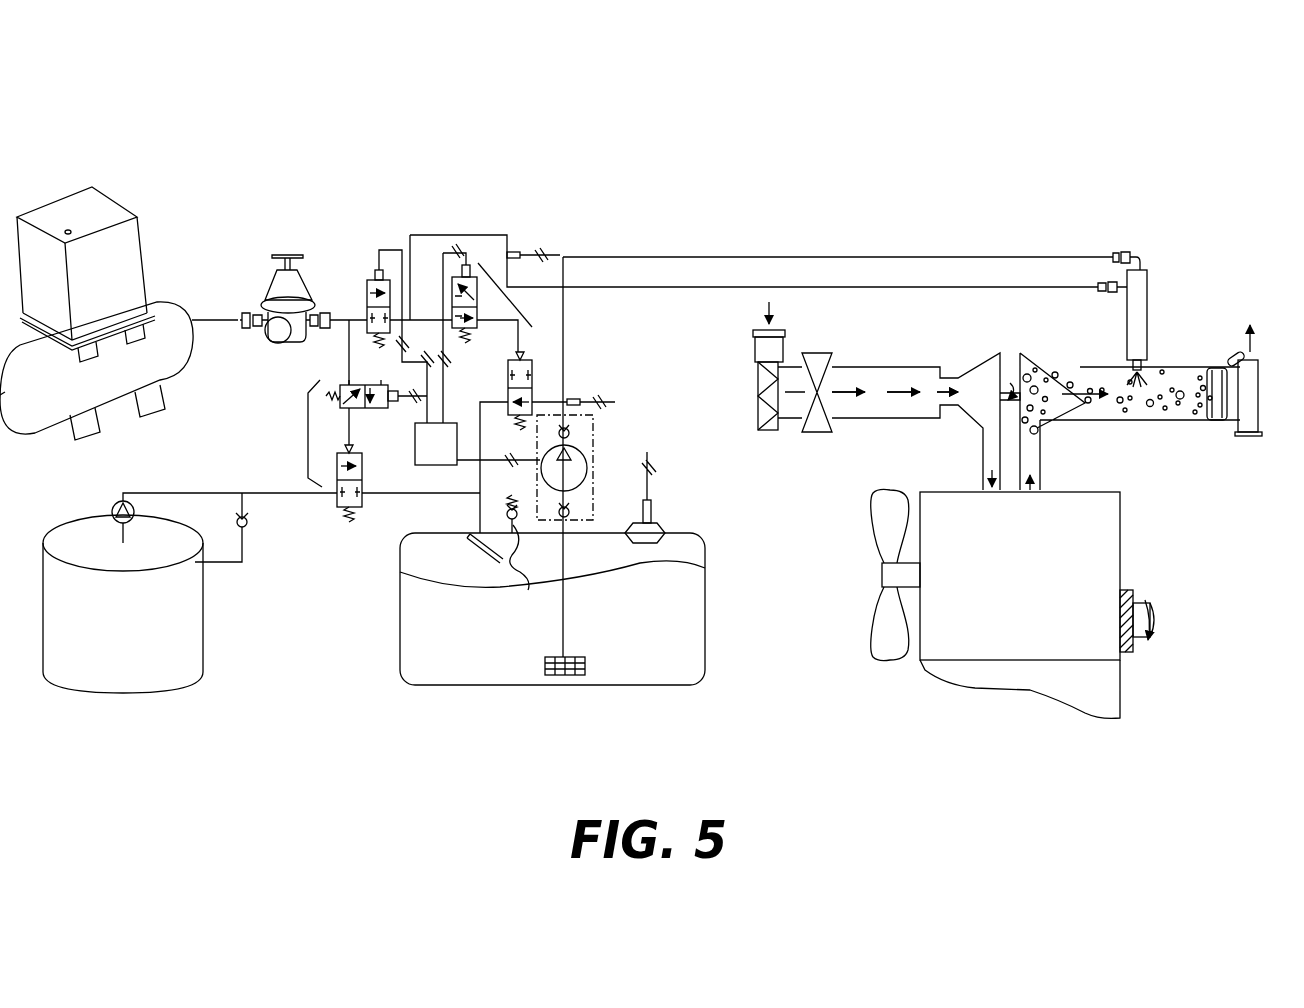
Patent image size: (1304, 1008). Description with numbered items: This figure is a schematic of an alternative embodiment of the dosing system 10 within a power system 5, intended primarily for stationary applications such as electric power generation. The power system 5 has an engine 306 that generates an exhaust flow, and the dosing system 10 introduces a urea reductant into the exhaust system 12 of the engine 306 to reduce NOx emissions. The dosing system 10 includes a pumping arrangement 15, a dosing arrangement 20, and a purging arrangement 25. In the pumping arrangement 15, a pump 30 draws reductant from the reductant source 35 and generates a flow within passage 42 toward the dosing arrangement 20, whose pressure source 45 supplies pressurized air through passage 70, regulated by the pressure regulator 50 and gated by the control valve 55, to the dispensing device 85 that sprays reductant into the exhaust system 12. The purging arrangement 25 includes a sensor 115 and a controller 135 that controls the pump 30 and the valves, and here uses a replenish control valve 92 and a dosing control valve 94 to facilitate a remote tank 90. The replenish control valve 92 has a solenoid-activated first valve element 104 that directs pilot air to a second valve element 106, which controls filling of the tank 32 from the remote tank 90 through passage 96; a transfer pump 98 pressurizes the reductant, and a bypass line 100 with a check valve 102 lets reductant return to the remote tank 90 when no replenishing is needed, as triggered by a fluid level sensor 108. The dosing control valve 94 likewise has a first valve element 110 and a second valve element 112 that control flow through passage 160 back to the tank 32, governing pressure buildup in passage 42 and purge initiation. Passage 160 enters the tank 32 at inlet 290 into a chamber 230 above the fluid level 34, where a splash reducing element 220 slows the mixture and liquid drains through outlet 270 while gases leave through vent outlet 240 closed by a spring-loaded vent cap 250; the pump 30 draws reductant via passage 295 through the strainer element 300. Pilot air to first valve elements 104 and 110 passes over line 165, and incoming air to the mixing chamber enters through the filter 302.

The dosing system 10 is at (50, 163).
The pressure source 45 is at (123, 389).
The pressure regulator 50 is at (277, 293).
The control valve 55 is at (367, 280).
The purging arrangement 25 is at (470, 200).
The first valve element 110 is at (492, 303).
The control line 165 is at (440, 290).
The sensor 115 is at (530, 245).
The dosing control valve 94 is at (520, 292).
The passage 70 is at (958, 287).
The second valve element 112 is at (533, 367).
The passage 42 is at (567, 318).
The passage 160 is at (476, 427).
The controller 135 is at (450, 456).
The pumping arrangement 15 is at (604, 468).
The pump 30 is at (574, 487).
The replenish control valve 92 is at (308, 432).
The first valve element 104 is at (384, 412).
The second valve element 106 is at (372, 455).
The transfer pump 98 is at (113, 517).
The remote tank 90 is at (132, 635).
The bypass line 100 is at (220, 563).
The check valve 102 is at (248, 527).
The passage 96 is at (297, 493).
The spring-loaded vent cap 250 is at (510, 507).
The reductant source 35 is at (726, 590).
The tank 32 is at (637, 685).
The outlet 34 is at (590, 525).
The inlet 290 is at (480, 533).
The chamber 230 is at (460, 538).
The splash reducing element 220 is at (482, 553).
The outlet 270 is at (505, 575).
The vent outlet 240 is at (570, 548).
The passage 295 is at (567, 618).
The strainer element 300 is at (585, 657).
The fluid level sensor 108 is at (663, 527).
The air filter 302 is at (800, 326).
The dosing arrangement 20 is at (1200, 206).
The dispensing device 85 is at (1142, 298).
The exhaust system 12 is at (1265, 390).
The power system 5 is at (1152, 516).
The engine 306 is at (1027, 585).